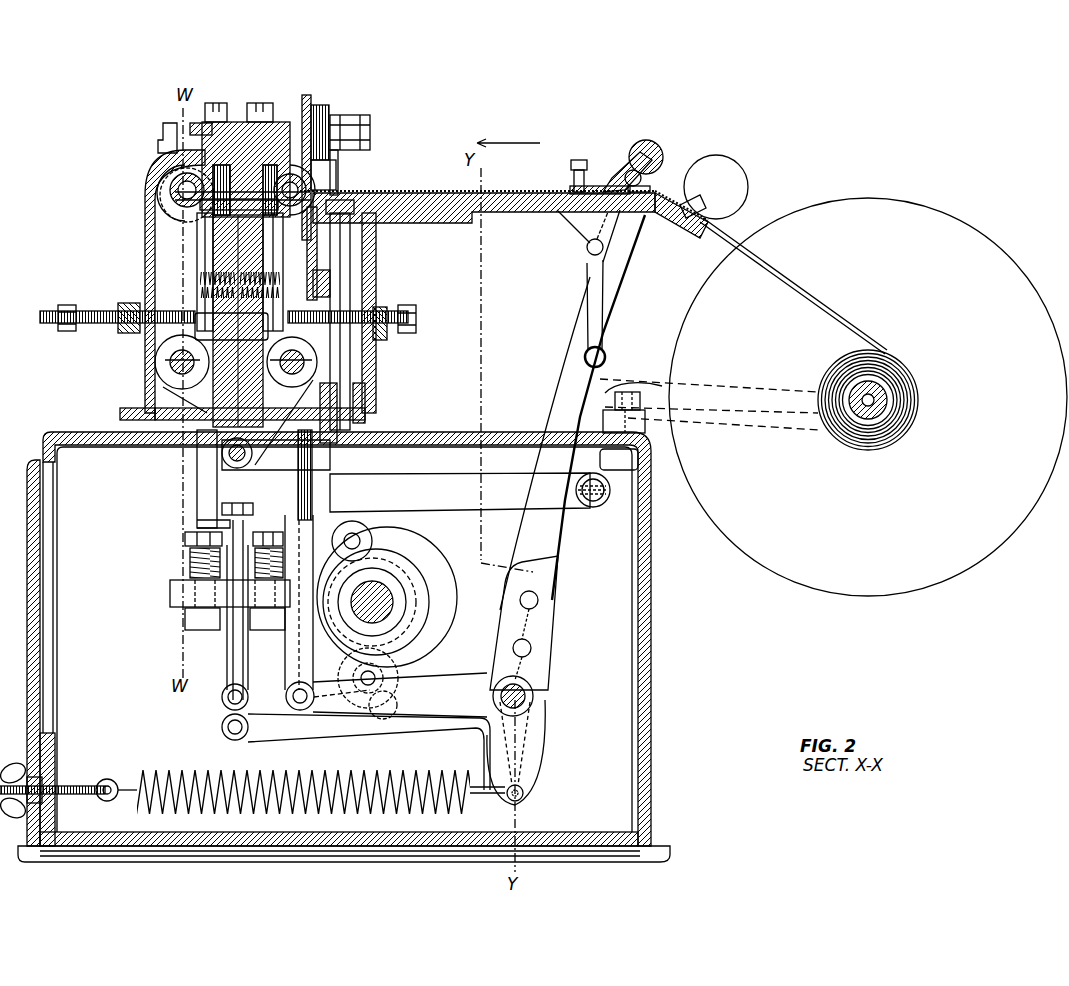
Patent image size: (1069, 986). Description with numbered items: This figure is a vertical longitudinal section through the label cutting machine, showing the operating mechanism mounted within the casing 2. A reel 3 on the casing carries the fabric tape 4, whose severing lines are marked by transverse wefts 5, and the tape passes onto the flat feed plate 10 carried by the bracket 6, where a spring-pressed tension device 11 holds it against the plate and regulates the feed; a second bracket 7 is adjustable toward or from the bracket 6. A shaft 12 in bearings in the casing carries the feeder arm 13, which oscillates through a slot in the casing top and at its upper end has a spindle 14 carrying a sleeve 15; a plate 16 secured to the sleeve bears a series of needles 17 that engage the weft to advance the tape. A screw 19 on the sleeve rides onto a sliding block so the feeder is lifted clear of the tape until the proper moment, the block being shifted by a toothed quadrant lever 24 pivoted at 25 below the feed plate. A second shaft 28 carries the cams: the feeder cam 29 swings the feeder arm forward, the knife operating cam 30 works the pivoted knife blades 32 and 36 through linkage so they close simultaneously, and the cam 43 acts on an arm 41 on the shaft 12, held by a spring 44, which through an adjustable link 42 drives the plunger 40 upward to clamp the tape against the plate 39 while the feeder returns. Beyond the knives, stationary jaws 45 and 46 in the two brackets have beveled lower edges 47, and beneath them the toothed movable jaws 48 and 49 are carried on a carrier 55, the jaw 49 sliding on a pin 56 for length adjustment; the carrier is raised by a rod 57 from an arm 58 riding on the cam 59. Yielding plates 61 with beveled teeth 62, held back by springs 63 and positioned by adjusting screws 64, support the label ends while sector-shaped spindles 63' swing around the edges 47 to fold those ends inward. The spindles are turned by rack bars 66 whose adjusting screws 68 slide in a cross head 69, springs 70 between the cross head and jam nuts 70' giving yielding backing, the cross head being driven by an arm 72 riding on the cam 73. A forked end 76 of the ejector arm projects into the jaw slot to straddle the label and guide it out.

The casing 2 is at (651, 728).
The reel 3 is at (995, 252).
The tape 4 is at (483, 193).
The weft 5 is at (449, 193).
The bracket 6 is at (376, 358).
The bracket 7 is at (150, 240).
The feed plate 10 is at (521, 211).
The spring-pressed tension device 11 is at (706, 212).
The shaft 12 is at (535, 694).
The arm 13 is at (552, 563).
The spindle 14 is at (660, 165).
The sleeve 15 is at (646, 140).
The plate 16 is at (620, 172).
The needles 17 is at (568, 189).
The screw 19 is at (578, 170).
The quadrant lever 24 is at (586, 265).
The pivot 25 is at (586, 248).
The shaft 28 is at (388, 614).
The cam 29 is at (440, 600).
The knife operating cam 30 is at (338, 652).
The knife blade 32 is at (318, 290).
The knife blade 36 is at (330, 110).
The plate 39 is at (350, 190).
The plunger 40 is at (345, 372).
The arm 41 is at (446, 680).
The link 42 is at (290, 645).
The cam 43 is at (406, 610).
The spring 44 is at (338, 768).
The stationary jaw 45 is at (282, 180).
The stationary jaw 46 is at (170, 170).
The beveled edges 47 is at (180, 192).
The movable jaw 48 is at (265, 220).
The movable jaw 49 is at (230, 233).
The carrier 55 is at (255, 452).
The pin 56 is at (231, 326).
The rod 57 is at (233, 641).
The arm 58 is at (250, 735).
The cam 59 is at (318, 600).
The plates 61 is at (200, 260).
The beveled teeth 62 is at (200, 207).
The springs 63 is at (232, 281).
The spindles 63' is at (257, 183).
The adjusting screws 64 is at (66, 320).
The rack bars 66 is at (205, 455).
The adjusting screws 68 is at (190, 562).
The cross head 69 is at (205, 594).
The springs 70 is at (221, 539).
The jam nuts 70' is at (199, 519).
The arm 72 is at (312, 738).
The cam 73 is at (420, 549).
The forked end 76 is at (170, 182).